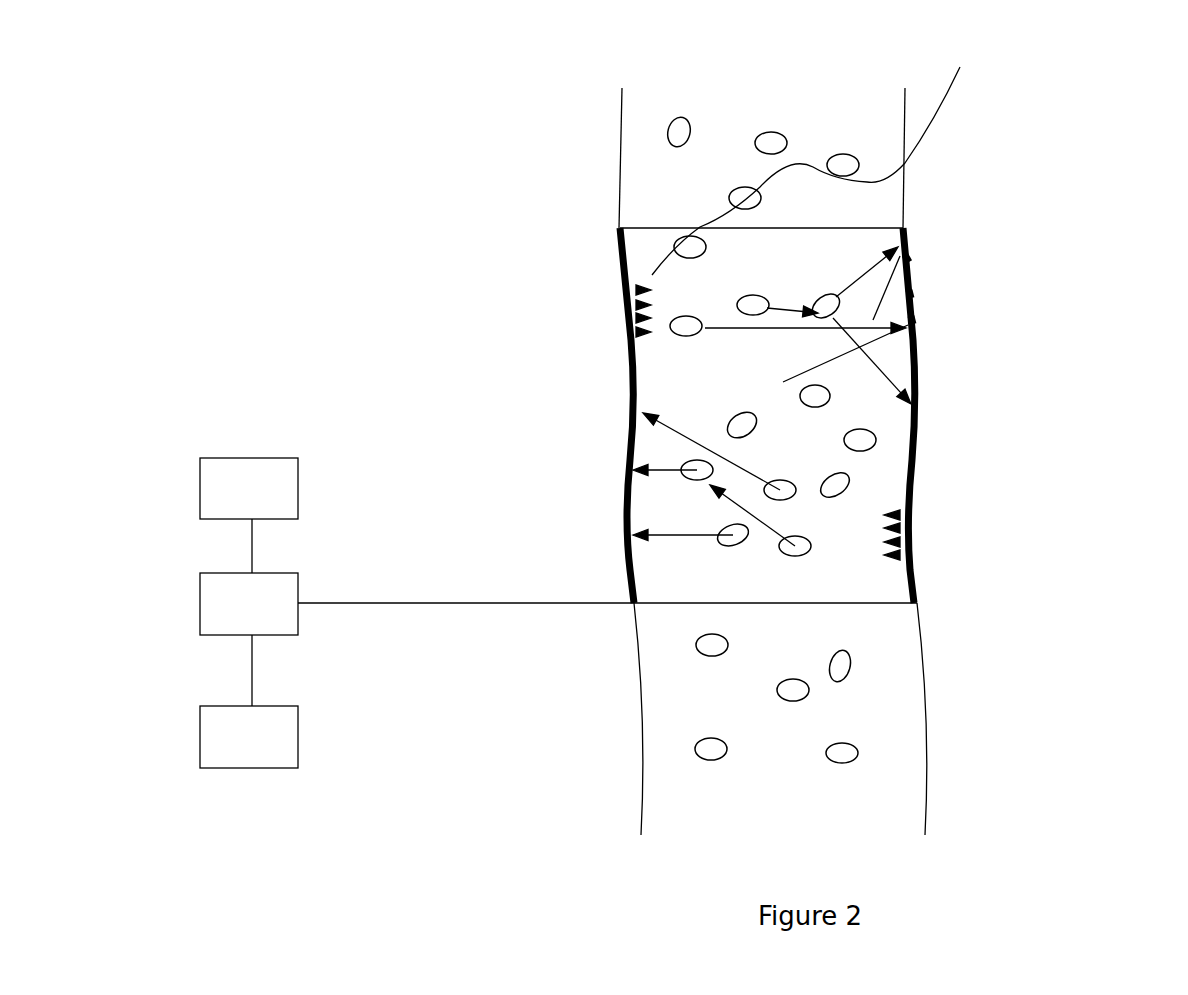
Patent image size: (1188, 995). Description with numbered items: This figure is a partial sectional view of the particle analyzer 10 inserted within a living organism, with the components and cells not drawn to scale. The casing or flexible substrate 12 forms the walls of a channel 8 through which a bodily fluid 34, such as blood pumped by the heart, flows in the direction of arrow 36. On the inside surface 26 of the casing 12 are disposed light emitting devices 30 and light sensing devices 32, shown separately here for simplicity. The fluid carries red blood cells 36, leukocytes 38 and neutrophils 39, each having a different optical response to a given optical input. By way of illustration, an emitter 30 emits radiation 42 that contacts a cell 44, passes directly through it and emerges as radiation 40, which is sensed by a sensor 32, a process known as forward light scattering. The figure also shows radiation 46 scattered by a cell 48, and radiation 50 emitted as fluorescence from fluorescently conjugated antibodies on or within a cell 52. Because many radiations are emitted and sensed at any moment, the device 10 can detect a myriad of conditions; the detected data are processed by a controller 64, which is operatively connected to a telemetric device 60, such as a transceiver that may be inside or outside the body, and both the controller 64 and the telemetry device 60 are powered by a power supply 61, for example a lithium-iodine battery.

The flow channel 8 is at (930, 775).
The particle analyzer 10 is at (502, 337).
The casing/flexible substrate 12 is at (924, 439).
The inside surface 26 is at (828, 162).
The light emitting devices 30 is at (613, 297).
The light sensing devices 32 is at (920, 293).
The bodily fluid 34 is at (913, 320).
The arrow / red blood cells 36 is at (770, 35).
The leukocytes 38 is at (678, 655).
The neutrophils 39 is at (690, 752).
The emerging radiation 40 is at (907, 257).
The radiation 42 is at (618, 233).
The cell 44 is at (665, 340).
The scattered radiation 46 is at (673, 432).
The cell 48 is at (763, 497).
The emitted radiation 50 is at (657, 543).
The cell 52 is at (748, 547).
The telemetric device 60 is at (249, 737).
The power supply 61 is at (417, 612).
The controller 64 is at (249, 488).